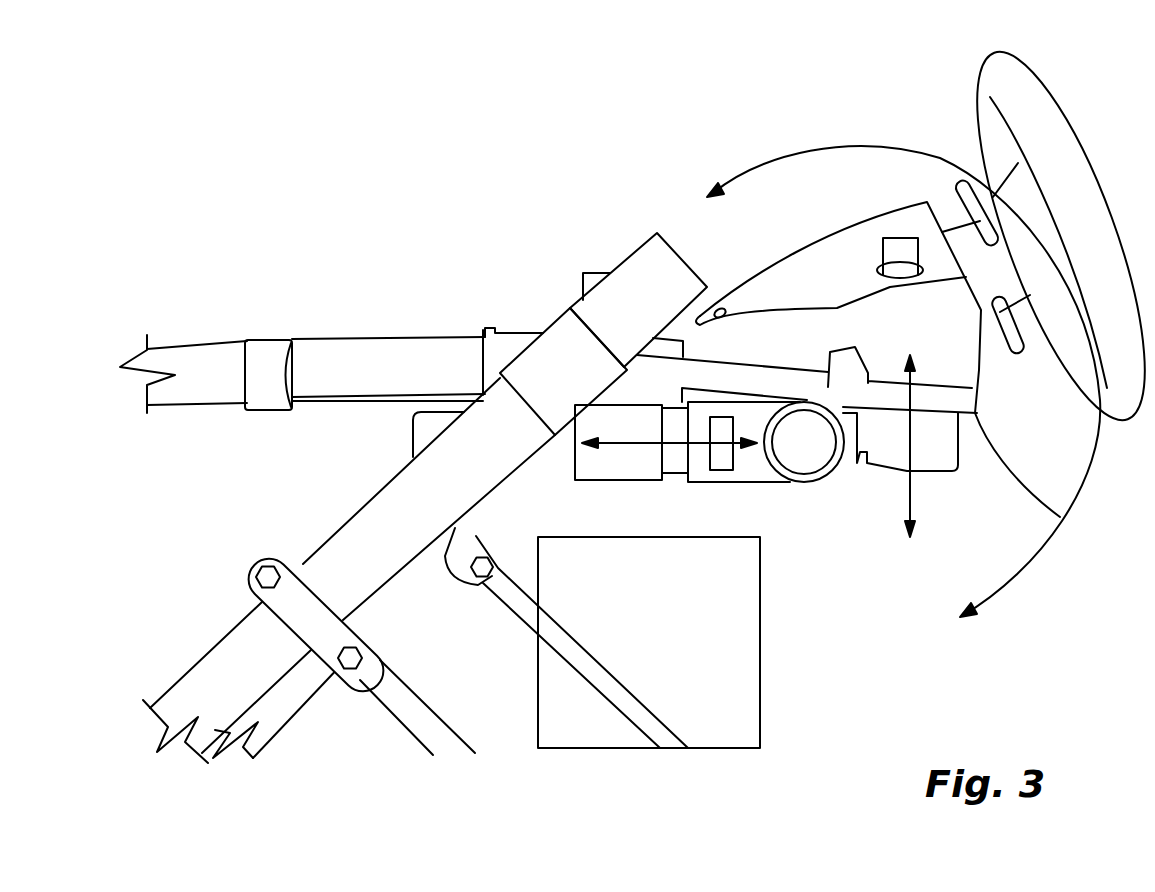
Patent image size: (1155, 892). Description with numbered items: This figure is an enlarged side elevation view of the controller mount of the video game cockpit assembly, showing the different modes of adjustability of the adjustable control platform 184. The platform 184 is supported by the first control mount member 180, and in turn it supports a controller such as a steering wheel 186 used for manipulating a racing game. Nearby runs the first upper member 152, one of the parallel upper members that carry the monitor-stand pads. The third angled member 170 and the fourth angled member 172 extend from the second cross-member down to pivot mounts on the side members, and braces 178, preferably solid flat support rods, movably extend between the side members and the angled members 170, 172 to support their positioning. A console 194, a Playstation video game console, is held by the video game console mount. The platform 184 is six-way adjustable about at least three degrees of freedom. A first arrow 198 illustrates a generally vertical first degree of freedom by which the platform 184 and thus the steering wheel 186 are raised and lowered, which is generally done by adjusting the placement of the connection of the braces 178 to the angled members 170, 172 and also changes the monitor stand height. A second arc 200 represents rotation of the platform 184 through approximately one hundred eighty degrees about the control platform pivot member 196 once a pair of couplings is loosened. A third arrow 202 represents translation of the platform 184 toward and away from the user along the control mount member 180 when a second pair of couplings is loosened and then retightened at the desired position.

The first upper member 152 is at (337, 360).
The third angled member 170 is at (223, 660).
The fourth angled member 172 is at (390, 598).
The braces 178 is at (517, 603).
The first control mount member 180 is at (413, 427).
The adjustable control platform 184 is at (1060, 517).
The steering wheel 186 is at (1023, 100).
The console 194 is at (686, 593).
The control platform pivot member 196 is at (805, 457).
The first arrow 198 is at (913, 493).
The second arc 200 is at (997, 597).
The third arrow 202 is at (627, 445).